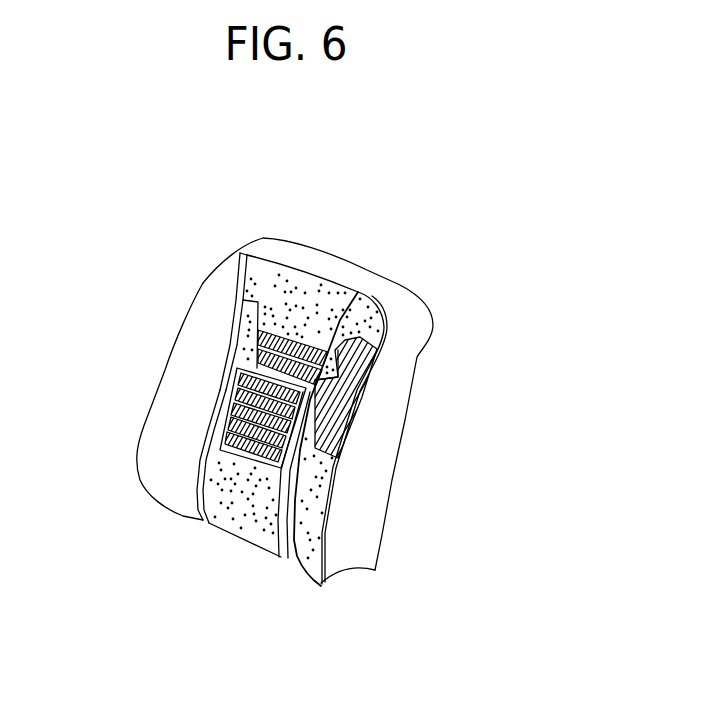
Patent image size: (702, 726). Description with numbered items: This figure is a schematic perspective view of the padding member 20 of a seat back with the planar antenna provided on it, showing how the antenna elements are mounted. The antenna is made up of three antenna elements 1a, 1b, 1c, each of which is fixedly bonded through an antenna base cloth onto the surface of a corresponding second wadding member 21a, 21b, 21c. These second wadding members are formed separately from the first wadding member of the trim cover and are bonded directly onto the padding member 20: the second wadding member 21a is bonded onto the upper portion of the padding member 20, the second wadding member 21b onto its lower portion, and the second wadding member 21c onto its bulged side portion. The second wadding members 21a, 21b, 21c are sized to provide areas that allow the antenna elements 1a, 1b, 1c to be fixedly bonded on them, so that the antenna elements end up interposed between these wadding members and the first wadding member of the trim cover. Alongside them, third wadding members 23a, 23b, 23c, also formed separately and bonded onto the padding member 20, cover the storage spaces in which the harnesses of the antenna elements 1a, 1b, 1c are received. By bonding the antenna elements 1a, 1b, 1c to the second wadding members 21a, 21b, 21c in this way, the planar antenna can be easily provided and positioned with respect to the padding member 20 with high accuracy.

The padding member 20 is at (362, 244).
The second wadding member 21a is at (287, 273).
The second wadding member 21b is at (248, 516).
The second wadding member 21c is at (370, 307).
The third wadding member 23a is at (240, 323).
The third wadding member 23b is at (200, 463).
The third wadding member 23c is at (337, 348).
The antenna element 1a is at (257, 351).
The antenna element 1b is at (238, 437).
The antenna element 1c is at (347, 402).